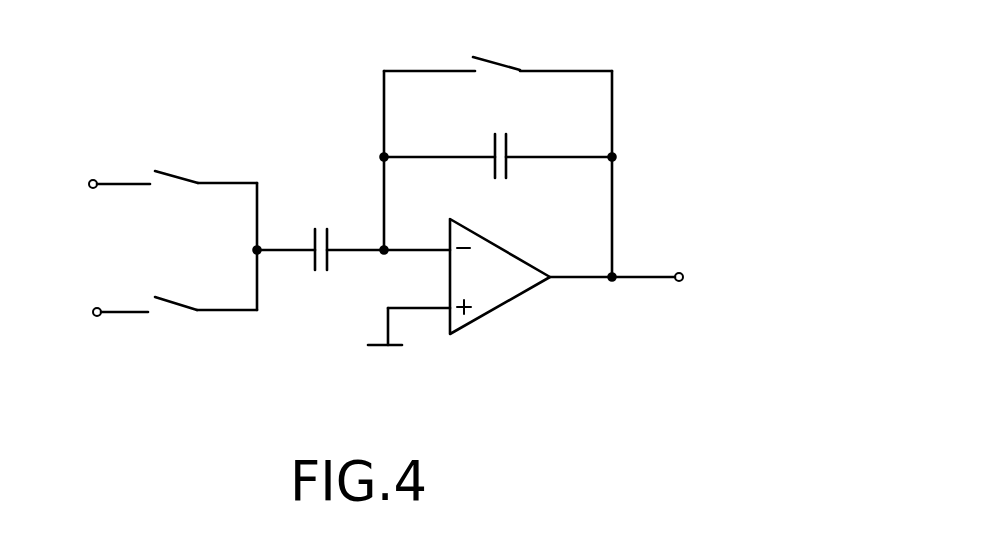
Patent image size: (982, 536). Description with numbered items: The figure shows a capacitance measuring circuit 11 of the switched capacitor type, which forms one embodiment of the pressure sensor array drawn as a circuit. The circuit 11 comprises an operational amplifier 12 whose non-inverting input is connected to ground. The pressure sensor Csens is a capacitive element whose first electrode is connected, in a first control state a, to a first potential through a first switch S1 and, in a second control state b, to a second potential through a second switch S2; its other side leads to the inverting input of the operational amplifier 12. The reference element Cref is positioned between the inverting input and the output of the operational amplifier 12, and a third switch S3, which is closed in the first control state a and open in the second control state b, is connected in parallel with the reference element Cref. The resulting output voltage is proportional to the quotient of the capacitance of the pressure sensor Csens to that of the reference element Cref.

The capacitance measuring circuit 11 is at (414, 183).
The operational amplifier 12 is at (515, 298).
The first switch S1 is at (206, 183).
The second switch S2 is at (206, 320).
The third switch S3 is at (502, 63).
The pressure sensor Csens is at (334, 229).
The reference element Cref is at (498, 138).